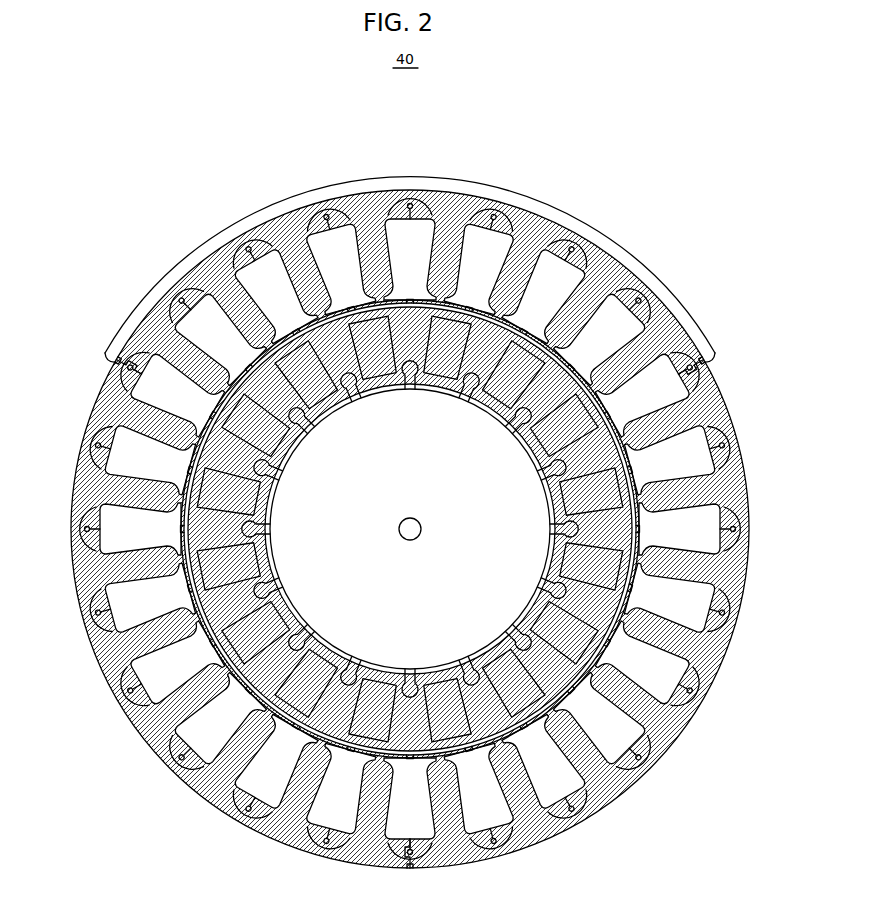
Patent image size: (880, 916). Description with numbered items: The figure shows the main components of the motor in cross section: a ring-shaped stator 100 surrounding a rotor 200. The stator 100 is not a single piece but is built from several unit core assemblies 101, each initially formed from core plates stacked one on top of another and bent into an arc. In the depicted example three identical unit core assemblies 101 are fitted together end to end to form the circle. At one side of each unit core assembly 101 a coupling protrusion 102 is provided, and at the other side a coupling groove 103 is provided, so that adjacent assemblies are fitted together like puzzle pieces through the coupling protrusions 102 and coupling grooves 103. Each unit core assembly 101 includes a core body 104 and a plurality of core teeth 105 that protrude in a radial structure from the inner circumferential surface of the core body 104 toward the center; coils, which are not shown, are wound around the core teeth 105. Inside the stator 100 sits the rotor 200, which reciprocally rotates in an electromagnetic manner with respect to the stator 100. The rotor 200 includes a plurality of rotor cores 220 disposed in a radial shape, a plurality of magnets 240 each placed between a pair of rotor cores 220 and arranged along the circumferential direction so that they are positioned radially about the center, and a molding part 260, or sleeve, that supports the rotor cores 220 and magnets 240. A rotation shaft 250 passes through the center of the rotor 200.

The stator 100 is at (419, 501).
The unit core assembly 101 is at (410, 177).
The coupling protrusion 102 is at (117, 361).
The coupling groove 103 is at (705, 361).
The core body 104 is at (92, 573).
The core teeth 105 is at (135, 493).
The rotor 200 is at (410, 529).
The rotor cores 220 is at (410, 529).
The magnets 240 is at (410, 529).
The rotation shaft 250 is at (404, 559).
The molding part 260 is at (410, 529).